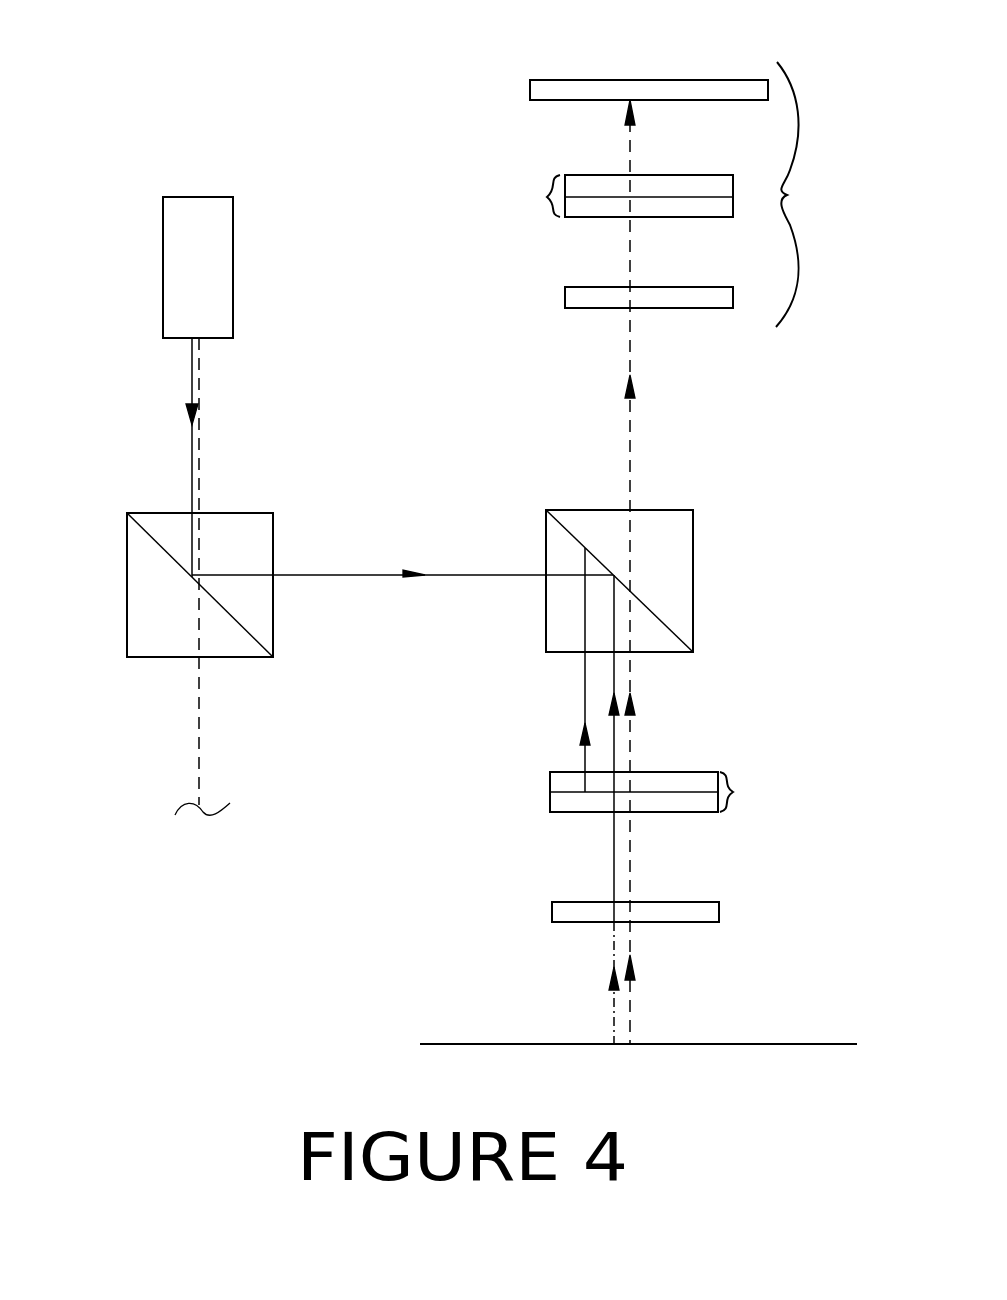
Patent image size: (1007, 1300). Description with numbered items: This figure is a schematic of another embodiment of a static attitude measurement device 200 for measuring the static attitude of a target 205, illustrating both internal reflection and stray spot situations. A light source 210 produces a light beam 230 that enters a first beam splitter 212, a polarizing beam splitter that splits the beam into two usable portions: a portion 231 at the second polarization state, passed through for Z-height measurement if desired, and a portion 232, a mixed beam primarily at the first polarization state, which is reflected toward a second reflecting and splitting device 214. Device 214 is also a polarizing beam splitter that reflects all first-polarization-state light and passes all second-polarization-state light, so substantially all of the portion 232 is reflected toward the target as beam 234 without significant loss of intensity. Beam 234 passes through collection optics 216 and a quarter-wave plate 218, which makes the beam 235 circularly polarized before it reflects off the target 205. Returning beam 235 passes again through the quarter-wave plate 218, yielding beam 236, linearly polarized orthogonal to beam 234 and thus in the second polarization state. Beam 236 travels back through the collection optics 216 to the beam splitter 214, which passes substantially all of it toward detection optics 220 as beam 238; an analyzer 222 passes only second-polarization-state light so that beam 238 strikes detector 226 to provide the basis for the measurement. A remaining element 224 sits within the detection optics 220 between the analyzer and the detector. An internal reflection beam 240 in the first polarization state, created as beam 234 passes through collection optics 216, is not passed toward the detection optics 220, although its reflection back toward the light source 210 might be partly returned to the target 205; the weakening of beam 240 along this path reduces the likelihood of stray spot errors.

The static attitude measurement device 200 is at (357, 118).
The target 205 is at (698, 1046).
The light source 210 is at (163, 247).
The first beam splitter 212 is at (127, 563).
The second reflecting and splitting device 214 is at (693, 559).
The collection optics 216 is at (735, 792).
The quarter-wave plate 218 is at (719, 910).
The detection optics 220 is at (790, 194).
The analyzer 222 is at (565, 296).
The polarizer/analyzer 224 is at (545, 197).
The detector 226 is at (620, 80).
The light beam 230 is at (199, 373).
The portion for Z-height measurement 231 is at (200, 740).
The portion for static attitude measurement 232 is at (368, 575).
The beam 234 is at (612, 850).
The beam 235 is at (614, 1012).
The beam 236 is at (634, 862).
The beam 238 is at (628, 447).
The internal reflection beam 240 is at (585, 675).